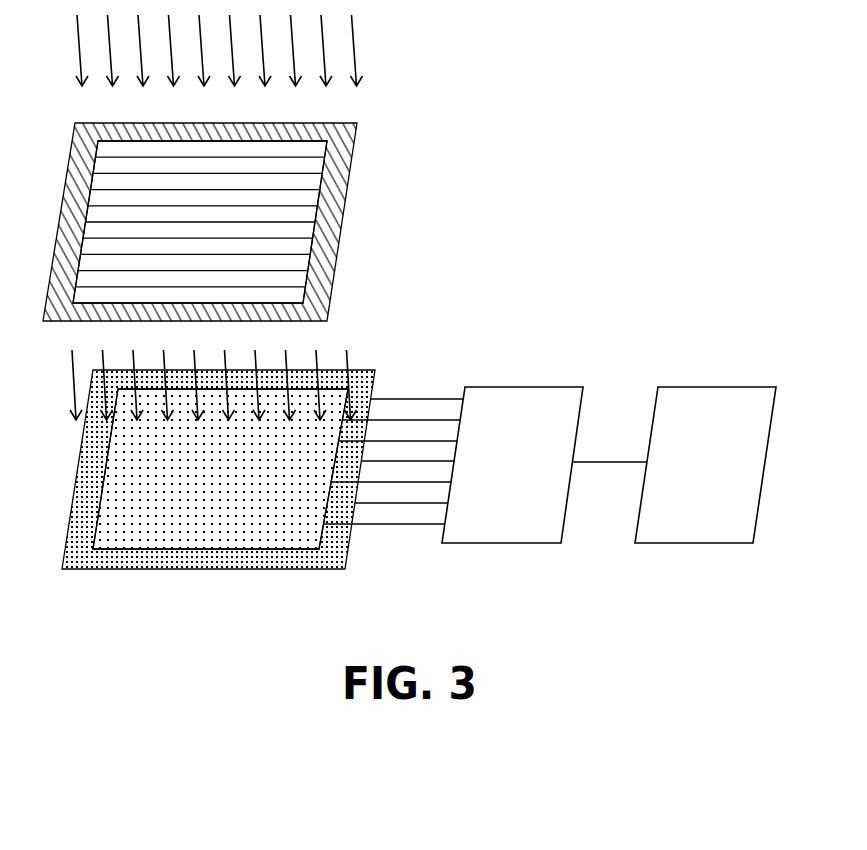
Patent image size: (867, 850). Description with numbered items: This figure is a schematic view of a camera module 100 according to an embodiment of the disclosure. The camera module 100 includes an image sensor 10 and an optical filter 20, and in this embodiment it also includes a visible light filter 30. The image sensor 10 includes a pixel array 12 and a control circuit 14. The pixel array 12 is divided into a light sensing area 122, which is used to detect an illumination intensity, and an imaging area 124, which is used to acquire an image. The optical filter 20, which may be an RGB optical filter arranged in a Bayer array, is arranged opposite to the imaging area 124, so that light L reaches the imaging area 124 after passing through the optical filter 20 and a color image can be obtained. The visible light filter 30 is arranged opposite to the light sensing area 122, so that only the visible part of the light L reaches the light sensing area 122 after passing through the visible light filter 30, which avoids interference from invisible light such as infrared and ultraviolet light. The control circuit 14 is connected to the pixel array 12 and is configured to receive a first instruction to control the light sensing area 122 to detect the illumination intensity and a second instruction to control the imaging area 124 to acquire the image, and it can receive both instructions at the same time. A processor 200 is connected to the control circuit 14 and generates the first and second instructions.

The light L is at (353, 33).
The camera module 100 is at (286, 222).
The optical filter 20 is at (300, 198).
The visible light filter 30 is at (330, 242).
The image sensor 10 is at (322, 502).
The pixel array 12 is at (247, 495).
The light sensing area 122 is at (297, 567).
The imaging area 124 is at (223, 538).
The control circuit 14 is at (512, 489).
The processor 200 is at (692, 544).